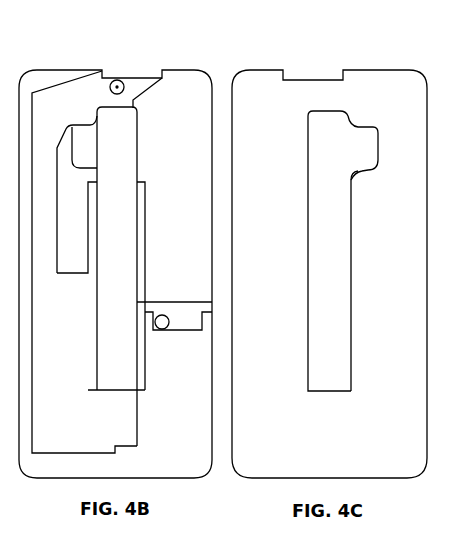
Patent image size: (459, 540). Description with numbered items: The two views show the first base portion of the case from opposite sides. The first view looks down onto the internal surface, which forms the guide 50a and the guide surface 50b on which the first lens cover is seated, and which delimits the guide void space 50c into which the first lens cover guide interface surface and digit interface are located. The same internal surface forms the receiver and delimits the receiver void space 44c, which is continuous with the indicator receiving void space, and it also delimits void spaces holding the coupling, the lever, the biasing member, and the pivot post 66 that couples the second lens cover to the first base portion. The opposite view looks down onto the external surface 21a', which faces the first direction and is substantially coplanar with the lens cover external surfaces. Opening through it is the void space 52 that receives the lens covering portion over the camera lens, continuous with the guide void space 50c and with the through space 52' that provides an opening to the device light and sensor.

In FIG. 4B, the pivot post 66 is at (116, 80).
In FIG. 4B, the guide 50a is at (91, 260).
In FIG. 4B, the guide surface 50b is at (143, 263).
In FIG. 4B, the guide void space 50c is at (112, 322).
In FIG. 4B, the receiver void space 44c is at (148, 308).
In FIG. 4C, the external surface of the first base portion 21a' is at (329, 248).
In FIG. 4C, the void space 52 is at (319, 205).
In FIG. 4C, the through space 52' is at (355, 99).